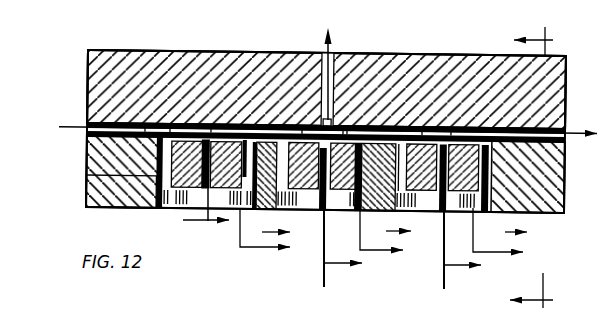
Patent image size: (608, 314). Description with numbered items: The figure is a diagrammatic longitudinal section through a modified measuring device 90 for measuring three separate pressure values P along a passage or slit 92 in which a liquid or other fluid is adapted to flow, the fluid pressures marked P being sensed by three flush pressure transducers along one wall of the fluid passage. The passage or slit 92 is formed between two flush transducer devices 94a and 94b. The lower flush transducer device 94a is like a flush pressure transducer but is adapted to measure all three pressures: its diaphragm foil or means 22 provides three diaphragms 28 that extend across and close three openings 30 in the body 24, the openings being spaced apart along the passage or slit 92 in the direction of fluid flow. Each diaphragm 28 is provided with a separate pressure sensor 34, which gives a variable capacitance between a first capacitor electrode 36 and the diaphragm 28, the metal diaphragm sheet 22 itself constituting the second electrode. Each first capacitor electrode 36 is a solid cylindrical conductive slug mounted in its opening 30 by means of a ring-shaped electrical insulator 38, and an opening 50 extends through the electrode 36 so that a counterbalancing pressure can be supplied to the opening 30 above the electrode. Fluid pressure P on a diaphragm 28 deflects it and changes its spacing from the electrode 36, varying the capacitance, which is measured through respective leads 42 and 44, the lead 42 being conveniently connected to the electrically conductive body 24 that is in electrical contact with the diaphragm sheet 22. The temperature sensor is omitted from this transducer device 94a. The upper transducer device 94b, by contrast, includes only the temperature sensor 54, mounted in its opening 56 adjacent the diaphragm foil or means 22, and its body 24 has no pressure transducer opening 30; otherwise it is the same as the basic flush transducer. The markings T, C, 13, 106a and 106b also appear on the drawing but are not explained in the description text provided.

The modified measuring device 90 is at (86, 45).
The flush transducer device 94b is at (88, 80).
The flush transducer device 94a is at (88, 197).
The passage or slit 92 is at (121, 122).
The diaphragm sheet or foil 22 is at (146, 122).
The diaphragm 28 is at (171, 122).
The opening 50 is at (212, 122).
The temperature sensor 54 is at (344, 122).
The temperature sensor opening 56 is at (334, 53).
The section line 13- 13 is at (520, 169).
The first capacitor electrode 36 is at (158, 153).
The ring-shaped electrical insulator 38 is at (158, 183).
The body 24 is at (548, 173).
The opening 30 is at (160, 207).
The pressure sensor 34 is at (230, 208).
The lead 42 is at (264, 231).
The lead 44 is at (268, 282).
The drain passage 106a is at (260, 313).
The drain passage 106b is at (457, 310).
The pressure value P is at (323, 224).
The control port C is at (419, 242).
The tank port T is at (328, 61).